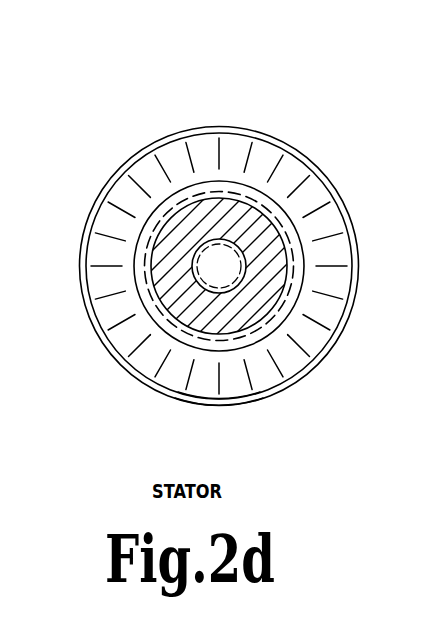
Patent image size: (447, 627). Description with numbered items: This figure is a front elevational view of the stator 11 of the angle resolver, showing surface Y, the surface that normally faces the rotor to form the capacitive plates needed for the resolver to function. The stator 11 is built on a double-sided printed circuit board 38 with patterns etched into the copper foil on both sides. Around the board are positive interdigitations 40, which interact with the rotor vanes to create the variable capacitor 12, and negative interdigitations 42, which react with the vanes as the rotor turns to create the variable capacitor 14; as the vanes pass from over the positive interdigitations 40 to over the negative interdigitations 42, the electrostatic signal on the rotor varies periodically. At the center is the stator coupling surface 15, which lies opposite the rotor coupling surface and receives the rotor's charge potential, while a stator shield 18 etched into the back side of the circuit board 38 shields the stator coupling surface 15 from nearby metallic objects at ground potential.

The stator 11 is at (258, 90).
The variable capacitor 12 is at (343, 216).
The variable capacitor 14 is at (305, 263).
The stator coupling surface 15 is at (247, 204).
The stator shield 18 is at (203, 257).
The double-sided printed circuit board 38 is at (220, 406).
The positive interdigitations 40 is at (173, 140).
The negative interdigitations 42 is at (103, 236).